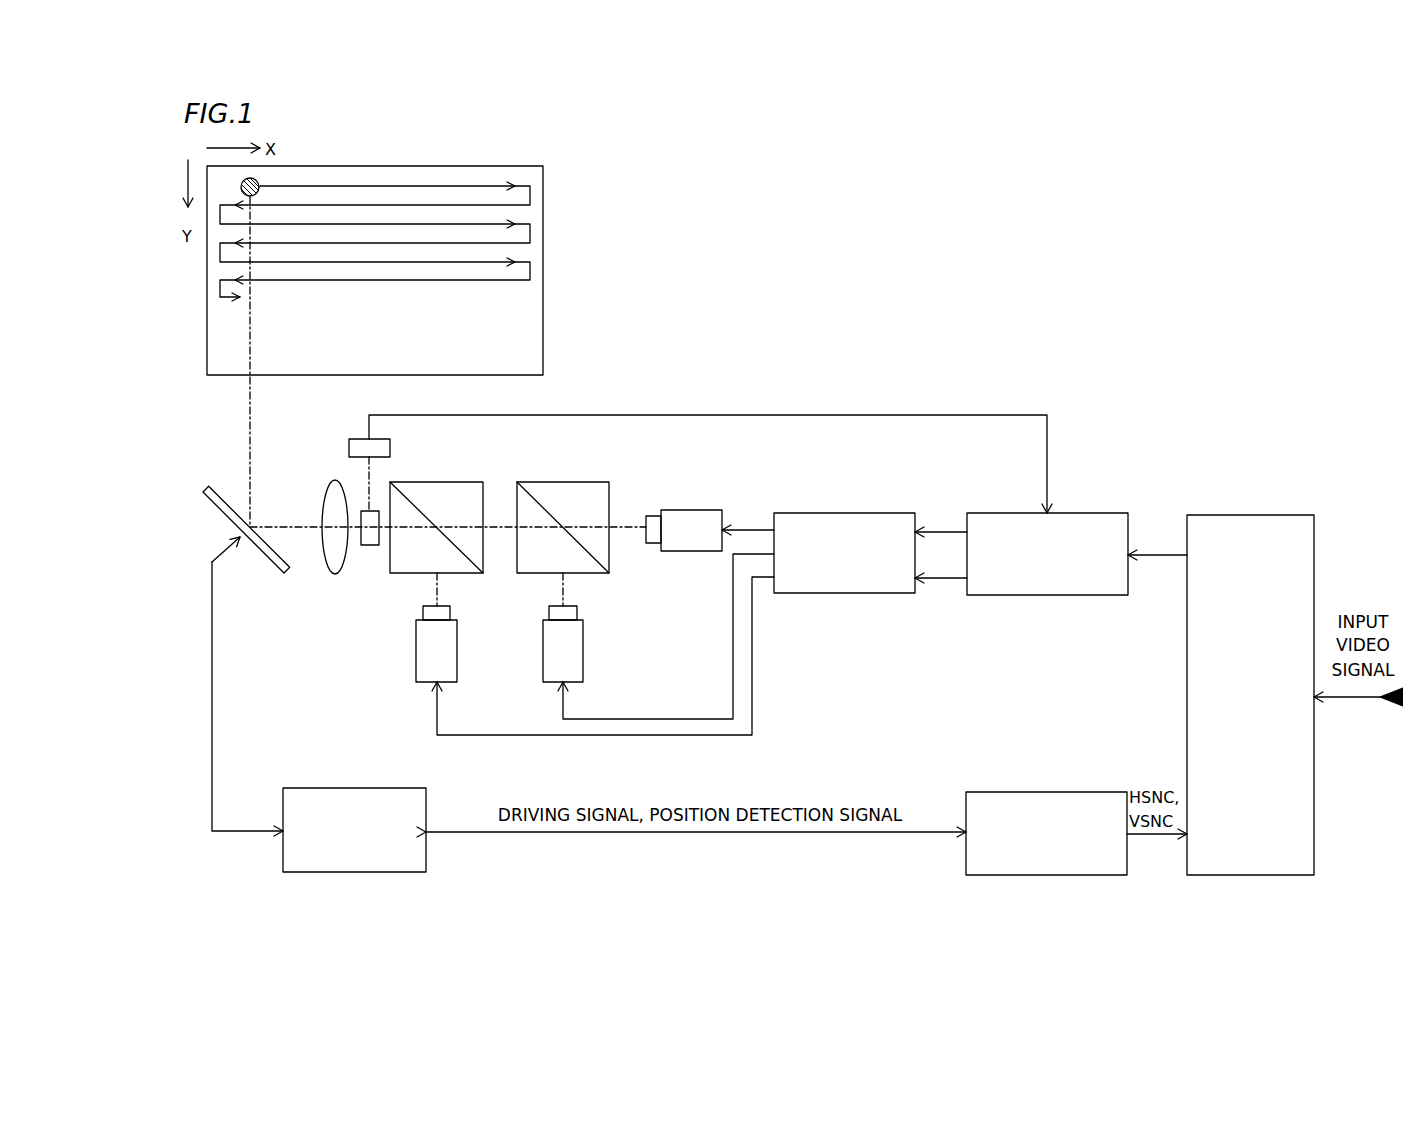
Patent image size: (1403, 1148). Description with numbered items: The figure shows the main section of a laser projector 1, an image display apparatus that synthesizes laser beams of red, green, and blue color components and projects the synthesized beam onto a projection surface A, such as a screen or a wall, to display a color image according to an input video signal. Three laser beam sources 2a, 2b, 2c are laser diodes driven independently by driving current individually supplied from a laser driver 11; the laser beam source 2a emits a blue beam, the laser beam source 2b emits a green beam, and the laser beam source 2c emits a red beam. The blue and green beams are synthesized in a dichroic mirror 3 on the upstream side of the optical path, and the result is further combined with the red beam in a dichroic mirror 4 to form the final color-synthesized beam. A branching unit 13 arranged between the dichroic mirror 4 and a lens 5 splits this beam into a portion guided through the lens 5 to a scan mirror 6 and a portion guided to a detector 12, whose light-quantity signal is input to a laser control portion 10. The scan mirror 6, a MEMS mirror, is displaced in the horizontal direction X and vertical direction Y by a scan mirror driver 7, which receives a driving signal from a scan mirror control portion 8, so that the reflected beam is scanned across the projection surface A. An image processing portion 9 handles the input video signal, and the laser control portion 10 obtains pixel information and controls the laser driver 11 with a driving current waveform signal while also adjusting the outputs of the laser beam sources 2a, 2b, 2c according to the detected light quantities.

The laser projector 1 is at (947, 370).
The laser beam source 2a is at (692, 510).
The laser beam source 2b is at (583, 650).
The laser beam source 2c is at (457, 650).
The dichroic mirror 3 is at (560, 482).
The dichroic mirror 4 is at (460, 482).
The lens 5 is at (335, 574).
The scan mirror 6 is at (273, 572).
The scan mirror driver 7 is at (352, 788).
The scan mirror control portion 8 is at (1045, 792).
The image processing portion 9 is at (1217, 515).
The laser control portion 10 is at (1072, 513).
The laser driver 11 is at (843, 513).
The detector 12 is at (349, 447).
The branching unit 13 is at (370, 550).
The projection surface A is at (543, 269).